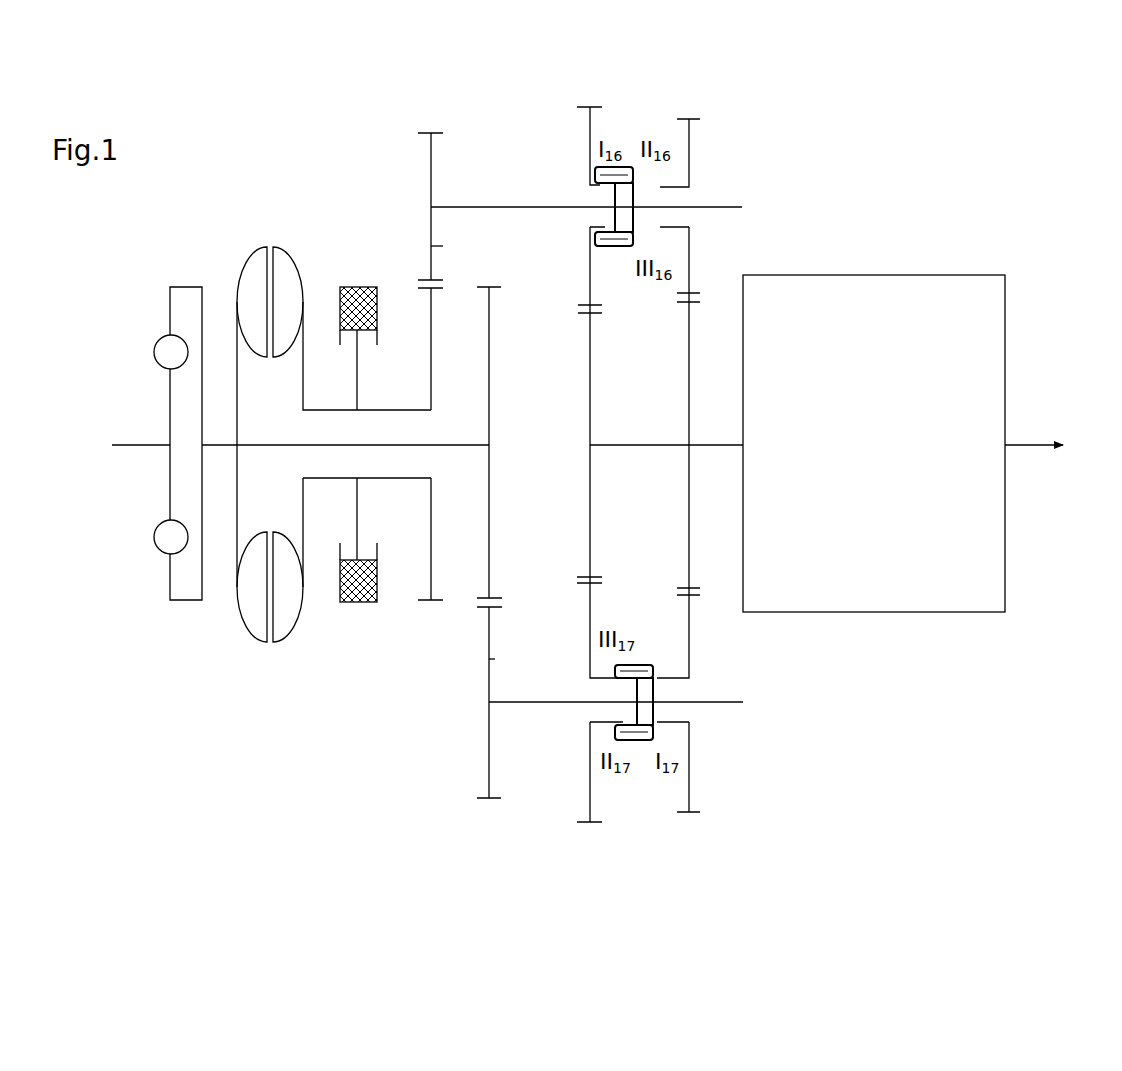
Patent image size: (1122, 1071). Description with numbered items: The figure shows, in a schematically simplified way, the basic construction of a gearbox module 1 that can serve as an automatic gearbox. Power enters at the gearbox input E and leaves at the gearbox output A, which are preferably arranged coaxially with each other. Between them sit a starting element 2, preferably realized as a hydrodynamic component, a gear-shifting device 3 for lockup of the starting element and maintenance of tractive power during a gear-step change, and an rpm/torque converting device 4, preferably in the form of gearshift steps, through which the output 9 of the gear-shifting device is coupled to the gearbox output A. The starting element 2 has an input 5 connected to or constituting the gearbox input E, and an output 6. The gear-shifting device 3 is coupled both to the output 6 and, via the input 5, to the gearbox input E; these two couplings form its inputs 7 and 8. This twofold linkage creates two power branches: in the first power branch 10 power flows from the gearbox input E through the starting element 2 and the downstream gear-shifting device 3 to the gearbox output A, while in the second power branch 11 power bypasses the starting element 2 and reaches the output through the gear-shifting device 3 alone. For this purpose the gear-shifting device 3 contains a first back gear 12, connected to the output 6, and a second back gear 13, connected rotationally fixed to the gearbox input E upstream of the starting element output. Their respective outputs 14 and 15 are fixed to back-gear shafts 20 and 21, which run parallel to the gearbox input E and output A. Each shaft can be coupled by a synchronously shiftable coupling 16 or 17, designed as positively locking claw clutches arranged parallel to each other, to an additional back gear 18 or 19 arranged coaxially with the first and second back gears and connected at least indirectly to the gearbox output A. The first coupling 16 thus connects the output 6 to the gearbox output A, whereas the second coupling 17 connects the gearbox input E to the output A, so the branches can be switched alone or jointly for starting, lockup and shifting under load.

The gearbox module 1 is at (508, 105).
The starting element 2 is at (275, 233).
The gear-shifting device 3 is at (432, 618).
The rpm/torque converting device 4 is at (823, 303).
The input of the starting element 5 is at (222, 440).
The output of the starting element 6 is at (303, 357).
The first input of the gear-shifting device 7 is at (429, 337).
The second input of the gear-shifting device 8 is at (465, 443).
The output of the gear-shifting device 9 is at (718, 435).
The first power branch 10 is at (412, 197).
The second power branch 11 is at (502, 427).
The first back gear 12 is at (432, 118).
The second back gear 13 is at (488, 807).
The output of the first back gear 14 is at (443, 246).
The output of the second back gear 15 is at (495, 659).
The first synchronously shiftable coupling 16 is at (615, 250).
The second synchronously shiftable coupling 17 is at (643, 647).
The third back gear 18 is at (592, 102).
The fourth back gear 19 is at (693, 110).
The first back-gear shaft 20 is at (500, 206).
The second back-gear shaft 21 is at (545, 705).
The gearbox input E is at (137, 450).
The gearbox output A is at (1020, 435).